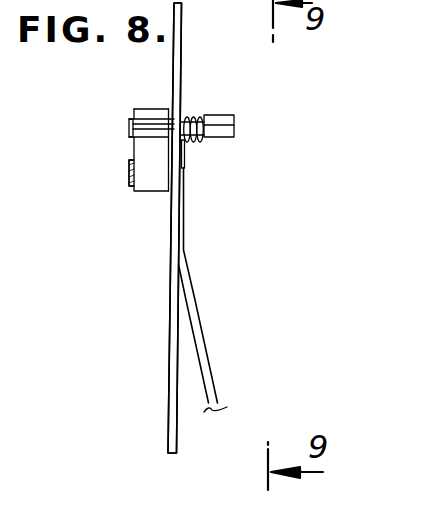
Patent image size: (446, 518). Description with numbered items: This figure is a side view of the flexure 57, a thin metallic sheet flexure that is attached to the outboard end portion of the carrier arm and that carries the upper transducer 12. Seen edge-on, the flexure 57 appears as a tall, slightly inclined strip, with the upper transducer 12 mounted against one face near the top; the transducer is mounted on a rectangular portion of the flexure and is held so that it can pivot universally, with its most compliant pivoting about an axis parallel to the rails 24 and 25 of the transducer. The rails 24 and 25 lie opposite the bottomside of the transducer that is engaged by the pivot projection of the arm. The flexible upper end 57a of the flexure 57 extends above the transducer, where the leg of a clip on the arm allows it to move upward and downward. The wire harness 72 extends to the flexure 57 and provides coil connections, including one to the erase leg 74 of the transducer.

The upper transducer 12 is at (108, 154).
The rail 24 is at (129, 128).
The rail 25 is at (127, 182).
The flexure 57 is at (157, 299).
The upper end of the flexure 57a is at (182, 22).
The wire harness 72 is at (206, 355).
The erase leg 74 is at (234, 128).